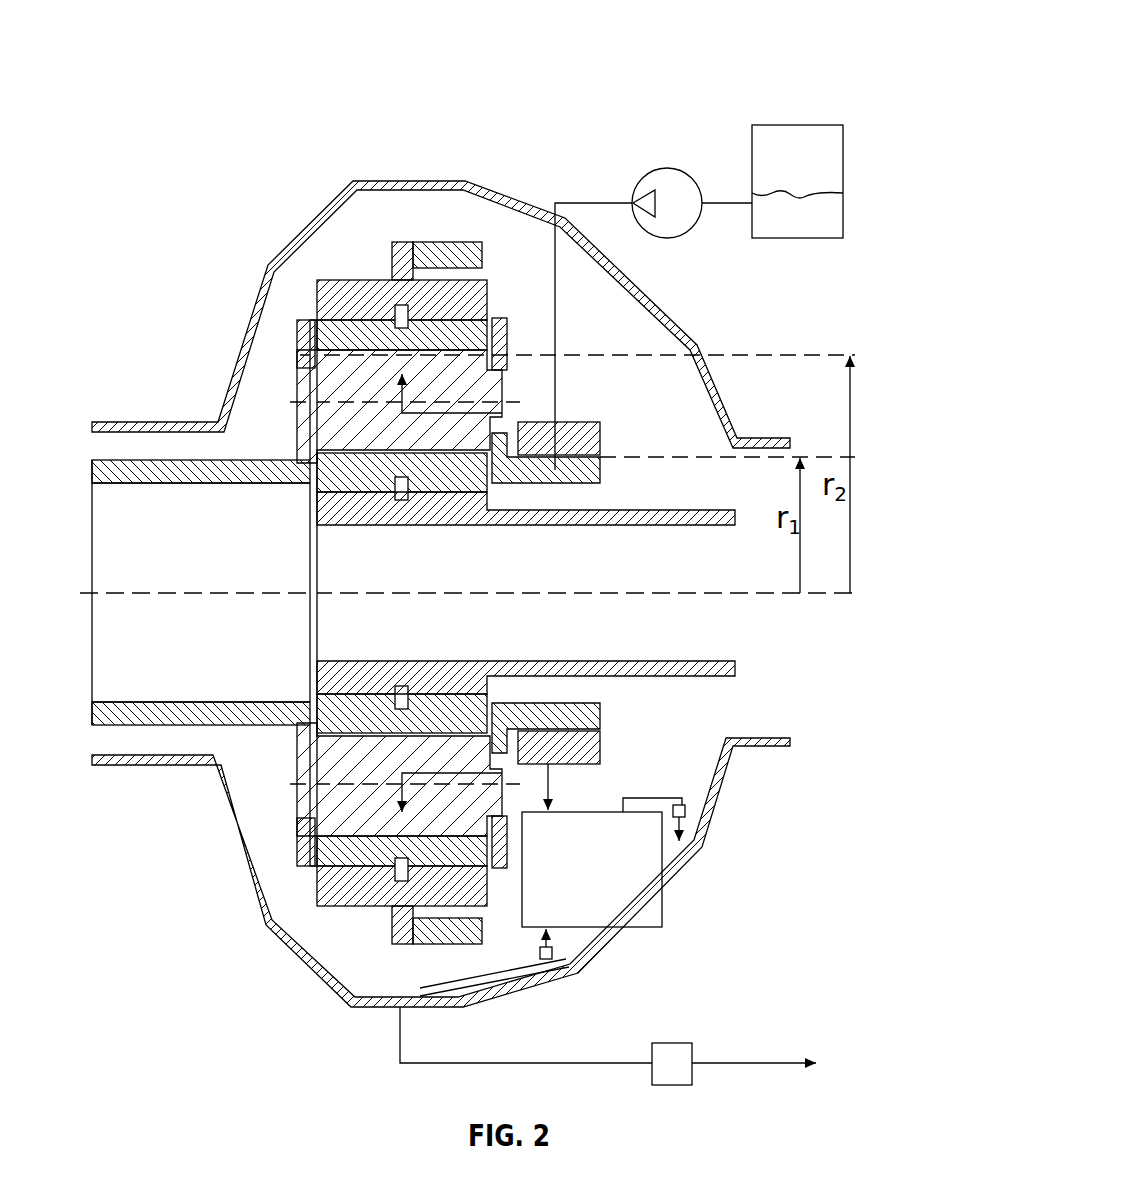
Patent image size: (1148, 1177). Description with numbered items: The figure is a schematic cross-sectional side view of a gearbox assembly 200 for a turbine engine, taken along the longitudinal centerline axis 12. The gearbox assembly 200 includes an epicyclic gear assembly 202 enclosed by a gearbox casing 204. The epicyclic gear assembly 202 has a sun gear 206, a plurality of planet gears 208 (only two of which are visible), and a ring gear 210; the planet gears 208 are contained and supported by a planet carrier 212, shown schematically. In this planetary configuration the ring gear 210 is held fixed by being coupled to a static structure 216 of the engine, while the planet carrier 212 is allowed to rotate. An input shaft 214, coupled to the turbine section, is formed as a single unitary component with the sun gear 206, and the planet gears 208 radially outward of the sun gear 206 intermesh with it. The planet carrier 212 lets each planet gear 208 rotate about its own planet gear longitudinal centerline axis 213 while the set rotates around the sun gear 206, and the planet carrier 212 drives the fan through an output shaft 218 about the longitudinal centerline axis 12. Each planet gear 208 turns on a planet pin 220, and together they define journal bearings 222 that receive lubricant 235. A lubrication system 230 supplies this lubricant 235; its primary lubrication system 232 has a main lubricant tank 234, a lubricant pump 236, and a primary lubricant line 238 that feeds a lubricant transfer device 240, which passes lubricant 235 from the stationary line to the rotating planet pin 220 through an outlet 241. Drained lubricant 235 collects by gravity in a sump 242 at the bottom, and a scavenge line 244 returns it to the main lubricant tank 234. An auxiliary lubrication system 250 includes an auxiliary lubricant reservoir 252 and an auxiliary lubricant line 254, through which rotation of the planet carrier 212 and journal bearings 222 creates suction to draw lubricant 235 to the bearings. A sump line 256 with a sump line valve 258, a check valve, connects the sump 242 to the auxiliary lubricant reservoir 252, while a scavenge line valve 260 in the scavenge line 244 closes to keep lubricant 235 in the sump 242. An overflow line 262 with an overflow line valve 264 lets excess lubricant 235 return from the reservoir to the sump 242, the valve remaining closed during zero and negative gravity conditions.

The longitudinal centerline axis 12 is at (181, 591).
The gearbox assembly 200 is at (441, 556).
The epicyclic gear assembly 202 is at (391, 562).
The gearbox casing 204 is at (272, 257).
The sun gear 206 is at (315, 505).
The planet gears 208 is at (458, 330).
The ring gear 210 is at (334, 296).
The planet carrier 212 is at (508, 340).
The planet gear longitudinal centerline axis 213 is at (308, 778).
The input shaft 214 is at (655, 510).
The static structure 216 is at (457, 242).
The output shaft 218 is at (115, 460).
The planet pin 220 is at (312, 416).
The journal bearings 222 is at (308, 354).
The lubrication system 230 is at (739, 245).
The primary lubrication system 232 is at (825, 157).
The main lubricant tank 234 is at (797, 125).
The lubricant 235 is at (832, 217).
The lubricant pump 236 is at (666, 168).
The primary lubricant line 238 is at (597, 201).
The lubricant transfer device 240 is at (564, 421).
The outlet 241 is at (604, 459).
The sump 242 is at (364, 973).
The scavenge line 244 is at (402, 1065).
The auxiliary lubrication system 250 is at (611, 855).
The auxiliary lubricant reservoir 252 is at (663, 853).
The auxiliary lubricant line 254 is at (551, 789).
The sump line 256 is at (500, 985).
The sump line valve 258 is at (553, 952).
The scavenge line valve 260 is at (675, 1085).
The overflow line 262 is at (650, 798).
The overflow line valve 264 is at (688, 815).